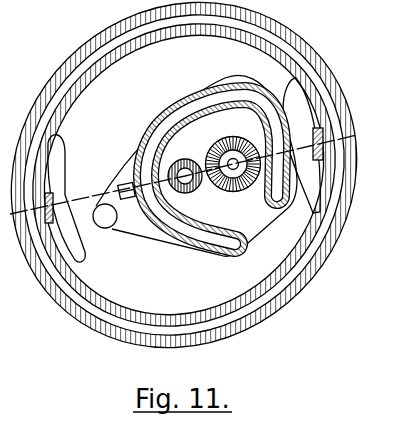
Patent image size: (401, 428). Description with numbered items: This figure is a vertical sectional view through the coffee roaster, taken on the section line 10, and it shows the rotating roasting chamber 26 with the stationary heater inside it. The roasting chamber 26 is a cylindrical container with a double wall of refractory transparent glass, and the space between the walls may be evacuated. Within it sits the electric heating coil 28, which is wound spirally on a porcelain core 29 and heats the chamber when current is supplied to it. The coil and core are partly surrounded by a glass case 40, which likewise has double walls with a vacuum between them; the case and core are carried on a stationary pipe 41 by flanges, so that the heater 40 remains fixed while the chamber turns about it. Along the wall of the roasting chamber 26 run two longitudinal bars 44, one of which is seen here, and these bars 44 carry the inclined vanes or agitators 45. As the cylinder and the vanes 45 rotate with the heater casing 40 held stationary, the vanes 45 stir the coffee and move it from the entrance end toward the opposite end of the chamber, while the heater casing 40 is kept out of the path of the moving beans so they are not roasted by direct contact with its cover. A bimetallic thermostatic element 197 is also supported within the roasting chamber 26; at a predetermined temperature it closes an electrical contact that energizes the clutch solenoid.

The section line 10 is at (357, 152).
The roasting chamber 26 is at (199, 194).
The electric heating coil 28 is at (229, 172).
The porcelain core 29 is at (224, 144).
The glass case 40 is at (190, 95).
The stationary pipe 41 is at (187, 192).
The bar 44 is at (52, 199).
The vane 45 is at (84, 257).
The bimetallic thermostatic element 197 is at (97, 229).